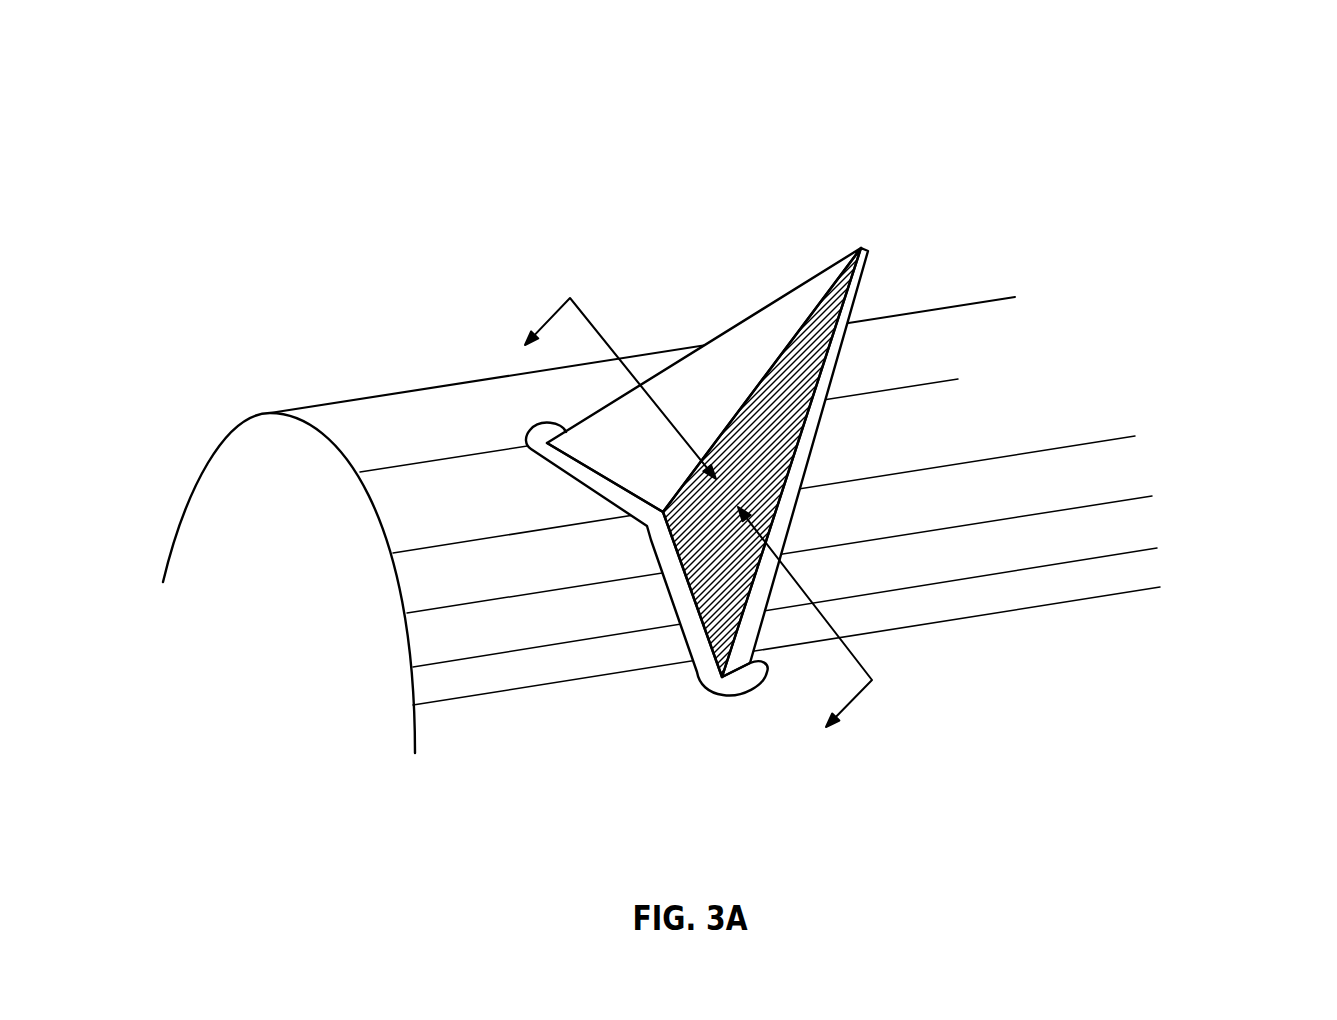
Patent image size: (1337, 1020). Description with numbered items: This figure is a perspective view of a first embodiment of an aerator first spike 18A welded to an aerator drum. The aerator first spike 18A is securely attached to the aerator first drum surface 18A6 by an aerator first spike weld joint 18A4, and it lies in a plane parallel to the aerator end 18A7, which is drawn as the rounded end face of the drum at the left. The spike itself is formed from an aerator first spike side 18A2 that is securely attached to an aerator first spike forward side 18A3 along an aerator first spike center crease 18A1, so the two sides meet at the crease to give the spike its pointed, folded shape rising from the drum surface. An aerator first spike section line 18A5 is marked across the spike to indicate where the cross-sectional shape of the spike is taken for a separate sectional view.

The aerator first spike 18A is at (856, 439).
The aerator first spike center crease 18A1 is at (825, 292).
The aerator first spike side 18A2 is at (757, 310).
The aerator first spike forward side 18A3 is at (803, 440).
The aerator first spike weld joint 18A4 is at (682, 600).
The aerator first spike section line 18A5 is at (872, 680).
The aerator first drum surface 18A6 is at (462, 637).
The aerator end 18A7 is at (287, 533).